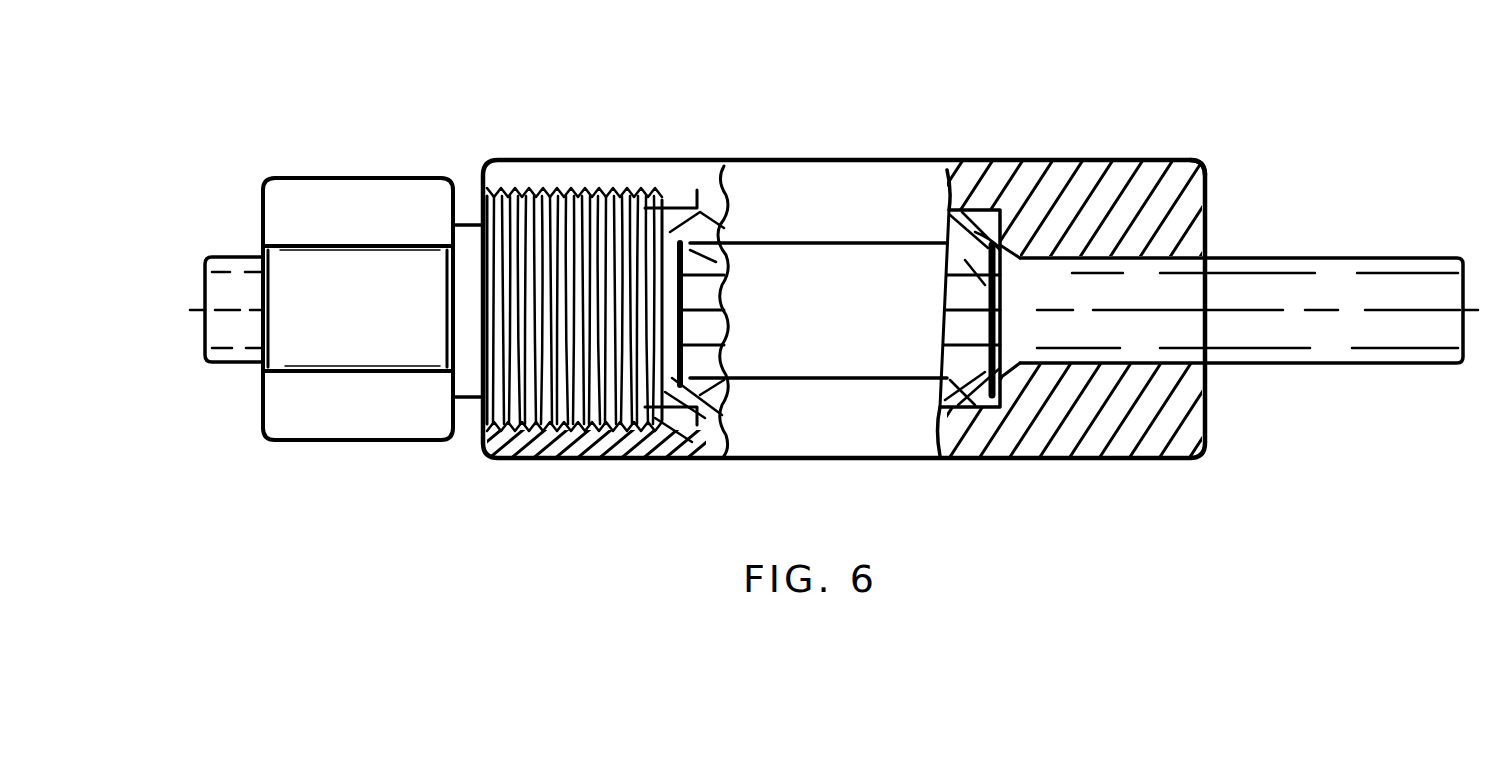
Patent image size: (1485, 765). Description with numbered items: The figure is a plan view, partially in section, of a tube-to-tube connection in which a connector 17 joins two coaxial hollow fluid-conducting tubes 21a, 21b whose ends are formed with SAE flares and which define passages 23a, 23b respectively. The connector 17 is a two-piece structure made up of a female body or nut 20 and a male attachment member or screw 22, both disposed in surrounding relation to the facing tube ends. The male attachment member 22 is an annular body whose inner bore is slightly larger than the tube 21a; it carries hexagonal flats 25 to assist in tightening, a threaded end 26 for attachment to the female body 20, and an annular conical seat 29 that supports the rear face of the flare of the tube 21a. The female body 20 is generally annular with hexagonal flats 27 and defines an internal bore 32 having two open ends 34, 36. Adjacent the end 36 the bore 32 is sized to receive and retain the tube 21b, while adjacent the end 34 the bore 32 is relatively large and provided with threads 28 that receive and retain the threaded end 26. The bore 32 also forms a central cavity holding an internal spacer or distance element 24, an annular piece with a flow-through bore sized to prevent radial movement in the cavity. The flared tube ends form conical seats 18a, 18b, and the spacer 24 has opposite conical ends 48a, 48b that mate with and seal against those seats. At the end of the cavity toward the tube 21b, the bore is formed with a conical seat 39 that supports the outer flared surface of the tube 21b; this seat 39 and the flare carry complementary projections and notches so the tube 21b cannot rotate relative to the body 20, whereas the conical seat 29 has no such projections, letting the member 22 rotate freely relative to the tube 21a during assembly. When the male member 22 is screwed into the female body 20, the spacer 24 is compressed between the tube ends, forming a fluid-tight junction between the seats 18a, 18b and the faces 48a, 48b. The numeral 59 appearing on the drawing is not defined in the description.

The connector 17 is at (779, 118).
The conical seat 18a is at (710, 187).
The conical seat 18b is at (985, 215).
The female body 20 is at (1206, 156).
The tube 21a is at (212, 262).
The tube 21b is at (1305, 258).
The male attachment member 22 is at (305, 166).
The passage 23a is at (222, 286).
The passage 23b is at (1305, 340).
The internal spacer 24 is at (985, 380).
The hexagonal flats 25 is at (323, 193).
The threaded end 26 is at (547, 190).
The hexagonal flats 27 is at (782, 180).
The threads 28 is at (568, 212).
The annular conical seat 29 is at (1010, 380).
The internal bore 32 is at (975, 385).
The open end 34 is at (480, 222).
The open end 36 is at (1200, 300).
The conical seat 39 is at (1060, 210).
The conical end 48a is at (717, 187).
The conical end 48b is at (982, 200).
The lip 59 is at (670, 460).